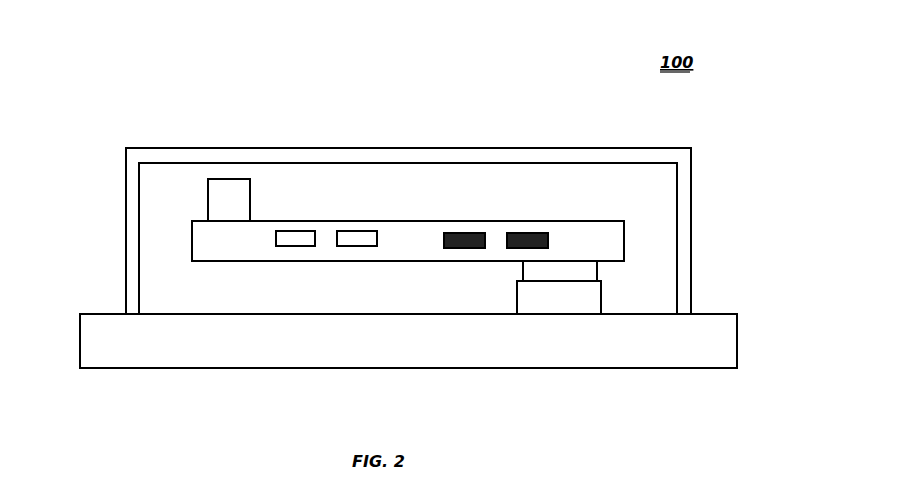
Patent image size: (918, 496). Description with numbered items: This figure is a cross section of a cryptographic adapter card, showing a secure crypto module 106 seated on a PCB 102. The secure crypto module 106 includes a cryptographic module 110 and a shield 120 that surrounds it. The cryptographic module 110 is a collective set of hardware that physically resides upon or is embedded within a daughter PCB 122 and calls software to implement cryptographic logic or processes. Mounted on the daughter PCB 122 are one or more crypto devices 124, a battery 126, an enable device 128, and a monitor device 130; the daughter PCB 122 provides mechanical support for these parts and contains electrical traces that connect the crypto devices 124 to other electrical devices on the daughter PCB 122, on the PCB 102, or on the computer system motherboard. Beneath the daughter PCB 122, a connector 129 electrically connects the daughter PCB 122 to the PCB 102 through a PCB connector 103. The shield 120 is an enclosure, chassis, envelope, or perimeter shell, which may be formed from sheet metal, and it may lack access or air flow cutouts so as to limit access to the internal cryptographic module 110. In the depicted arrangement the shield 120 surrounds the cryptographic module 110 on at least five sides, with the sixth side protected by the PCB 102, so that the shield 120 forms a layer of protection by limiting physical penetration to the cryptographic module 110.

The PCB 102 is at (720, 343).
The PCB connector 103 is at (542, 305).
The secure crypto module 106 is at (119, 133).
The cryptographic module 110 is at (456, 200).
The shield 120 is at (685, 206).
The daughter PCB 122 is at (607, 247).
The crypto devices 124 is at (463, 238).
The battery 126 is at (228, 198).
The enable device 128 is at (364, 238).
The connector 129 is at (577, 278).
The monitor device 130 is at (295, 238).